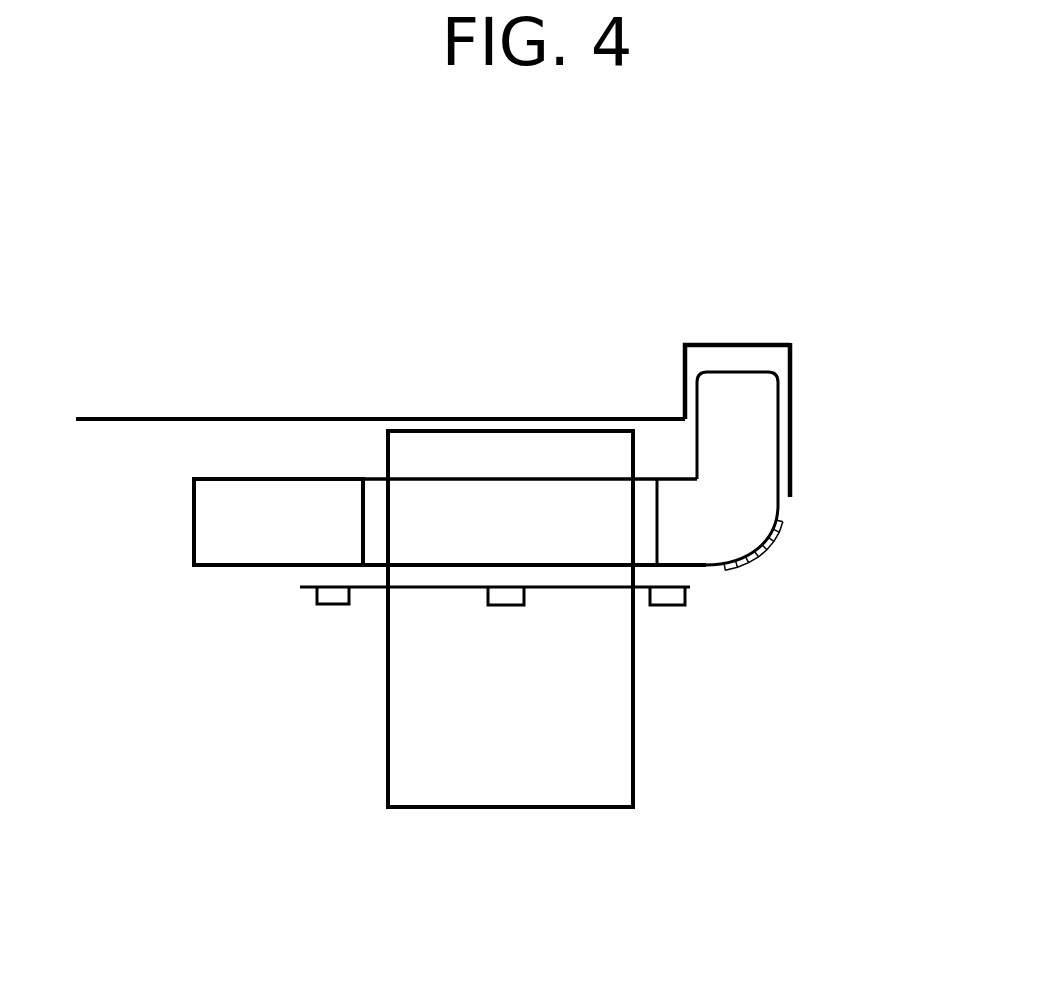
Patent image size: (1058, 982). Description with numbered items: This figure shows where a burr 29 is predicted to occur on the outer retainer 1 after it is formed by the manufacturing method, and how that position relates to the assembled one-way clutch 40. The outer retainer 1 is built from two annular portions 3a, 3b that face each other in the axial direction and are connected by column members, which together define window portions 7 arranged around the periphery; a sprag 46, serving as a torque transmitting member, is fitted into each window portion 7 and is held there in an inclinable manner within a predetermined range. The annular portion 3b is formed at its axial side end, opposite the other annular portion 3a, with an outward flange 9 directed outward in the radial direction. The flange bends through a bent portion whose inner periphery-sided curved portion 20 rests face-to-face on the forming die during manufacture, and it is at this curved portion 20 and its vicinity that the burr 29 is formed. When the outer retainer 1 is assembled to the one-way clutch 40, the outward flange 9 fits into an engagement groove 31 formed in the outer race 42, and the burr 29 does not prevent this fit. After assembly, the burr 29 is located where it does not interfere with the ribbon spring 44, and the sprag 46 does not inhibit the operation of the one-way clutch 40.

The outer retainer 1 is at (251, 438).
The annular portion 3a is at (253, 543).
The annular portion 3b is at (758, 437).
The window portion 7 is at (377, 497).
The outward flange 9 is at (738, 407).
The inner periphery-sided curved portion 20 is at (788, 503).
The burr 29 is at (768, 550).
The engagement groove 31 is at (792, 365).
The one-way clutch 40 is at (711, 237).
The outer race 42 is at (112, 400).
The ribbon spring 44 is at (368, 588).
The sprag 46 is at (598, 730).